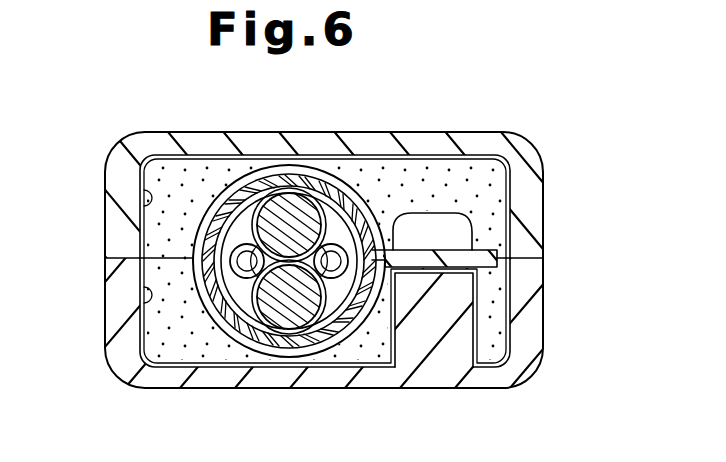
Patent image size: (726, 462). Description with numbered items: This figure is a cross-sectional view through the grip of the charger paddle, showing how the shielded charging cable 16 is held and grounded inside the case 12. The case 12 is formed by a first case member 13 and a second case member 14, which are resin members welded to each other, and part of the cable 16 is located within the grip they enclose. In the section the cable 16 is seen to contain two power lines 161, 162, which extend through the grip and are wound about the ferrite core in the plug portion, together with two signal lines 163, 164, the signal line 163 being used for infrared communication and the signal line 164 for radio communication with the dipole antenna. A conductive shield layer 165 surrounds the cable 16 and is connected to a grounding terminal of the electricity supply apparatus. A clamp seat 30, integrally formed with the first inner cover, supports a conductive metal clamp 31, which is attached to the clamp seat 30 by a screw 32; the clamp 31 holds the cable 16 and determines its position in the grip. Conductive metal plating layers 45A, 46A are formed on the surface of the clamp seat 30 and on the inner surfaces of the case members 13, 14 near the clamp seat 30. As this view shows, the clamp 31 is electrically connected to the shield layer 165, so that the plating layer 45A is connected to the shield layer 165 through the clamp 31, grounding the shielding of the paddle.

The case 12 is at (610, 208).
The first case member 13 is at (538, 277).
The second case member 14 is at (538, 217).
The shielded charging cable 16 is at (313, 188).
The power line 161 is at (290, 310).
The power line 162 is at (288, 212).
The signal line 163 is at (245, 245).
The signal line 164 is at (338, 257).
The conductive shield layer 165 is at (233, 337).
The clamp seat 30 is at (463, 283).
The clamp 31 is at (202, 210).
The screw 32 is at (457, 232).
The plating layer 45A is at (140, 307).
The plating layer 46A is at (140, 212).